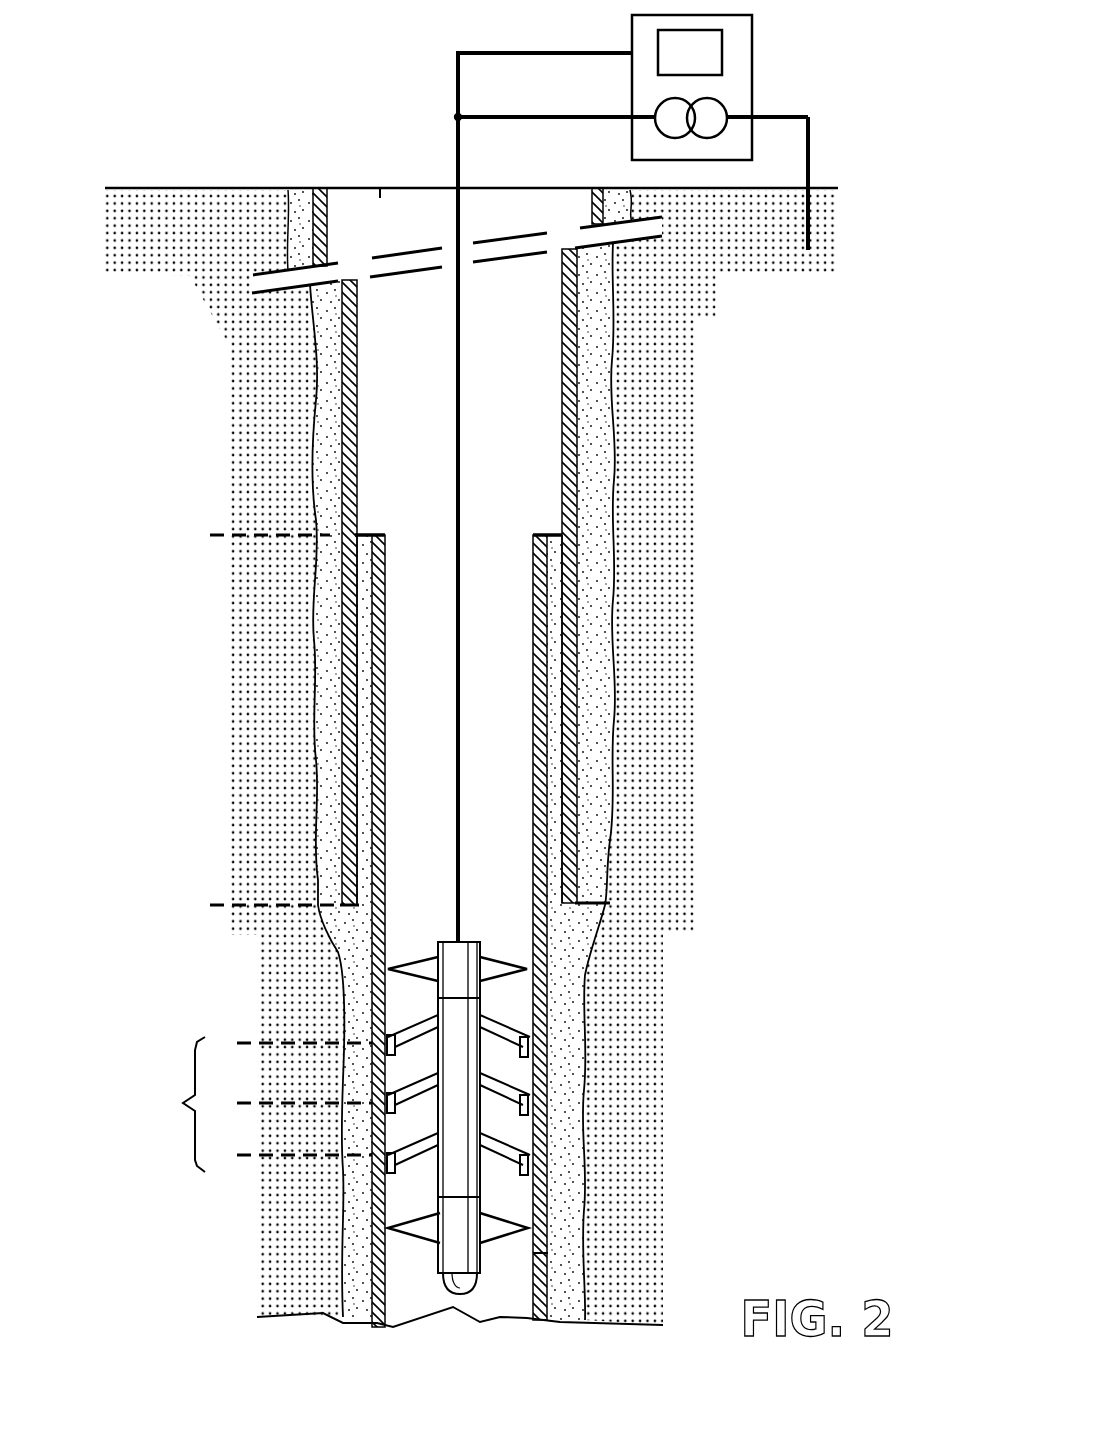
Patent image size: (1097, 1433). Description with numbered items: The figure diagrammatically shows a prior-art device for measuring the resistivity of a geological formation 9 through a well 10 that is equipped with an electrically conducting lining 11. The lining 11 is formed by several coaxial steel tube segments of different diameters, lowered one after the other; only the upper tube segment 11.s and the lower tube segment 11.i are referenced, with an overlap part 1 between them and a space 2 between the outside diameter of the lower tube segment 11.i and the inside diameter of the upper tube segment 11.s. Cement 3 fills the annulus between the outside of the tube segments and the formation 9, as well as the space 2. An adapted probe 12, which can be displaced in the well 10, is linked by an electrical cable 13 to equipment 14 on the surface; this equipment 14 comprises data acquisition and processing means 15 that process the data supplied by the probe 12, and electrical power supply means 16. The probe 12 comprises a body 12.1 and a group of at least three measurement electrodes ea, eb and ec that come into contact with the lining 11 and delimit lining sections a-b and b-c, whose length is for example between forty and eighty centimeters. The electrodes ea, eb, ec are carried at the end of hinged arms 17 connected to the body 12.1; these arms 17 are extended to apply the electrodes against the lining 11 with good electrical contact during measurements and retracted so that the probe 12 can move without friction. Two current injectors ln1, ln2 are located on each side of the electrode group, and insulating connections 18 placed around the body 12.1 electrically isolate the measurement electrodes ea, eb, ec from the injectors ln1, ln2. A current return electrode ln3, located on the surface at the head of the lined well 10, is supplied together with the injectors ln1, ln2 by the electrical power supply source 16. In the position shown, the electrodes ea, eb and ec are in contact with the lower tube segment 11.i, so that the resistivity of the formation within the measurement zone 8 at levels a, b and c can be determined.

The overlap part 1 is at (203, 535).
The space 2 is at (350, 915).
The cement 3 is at (597, 370).
The measurement zone 8 is at (181, 1104).
The geological formation 9 is at (182, 222).
The well 10 is at (380, 196).
The electrically conducting lining 11 is at (318, 185).
The upper tube segment 11.s is at (570, 500).
The lower tube segment 11.i is at (543, 713).
The probe 12 is at (433, 1258).
The body 12.1 is at (458, 1022).
The electrical cable 13 is at (458, 215).
The equipment 14 is at (630, 33).
The data acquisition and processing means 15 is at (713, 40).
The electrical power supply means 16 is at (717, 103).
The hinged arms 17 is at (530, 1203).
The insulating connections 18 is at (458, 1008).
The lining section boundary a is at (293, 1043).
The lining section boundary b is at (292, 1103).
The lining section boundary c is at (293, 1155).
The measurement electrode ea is at (530, 1050).
The measurement electrode eb is at (530, 1108).
The measurement electrode ec is at (530, 1167).
The current injector ln1 is at (600, 937).
The current injector ln2 is at (535, 1253).
The current return electrode ln3 is at (810, 224).